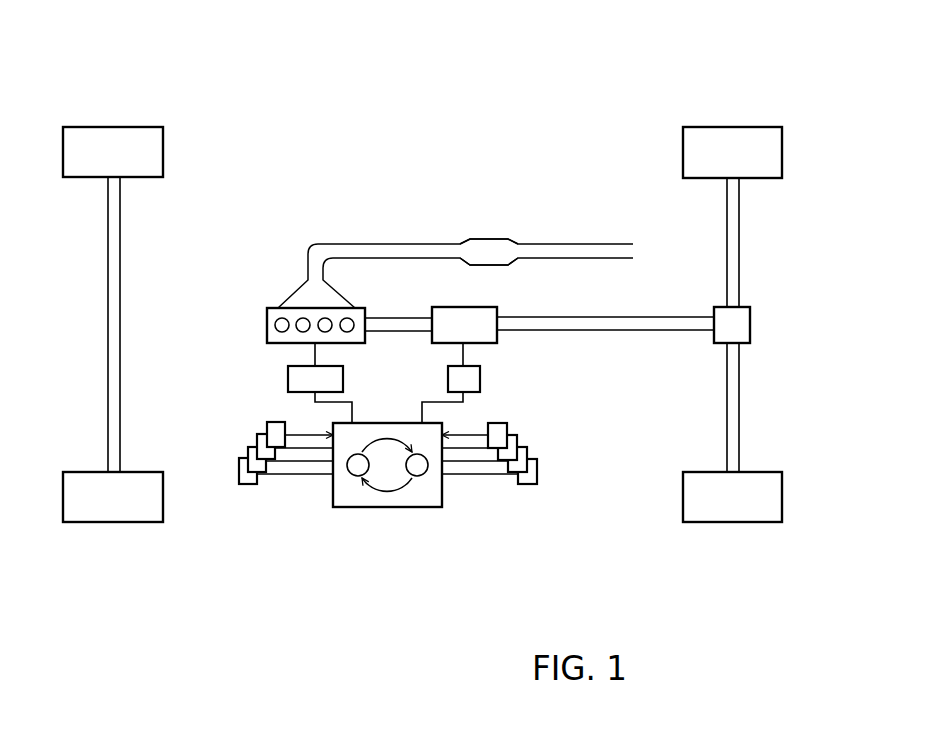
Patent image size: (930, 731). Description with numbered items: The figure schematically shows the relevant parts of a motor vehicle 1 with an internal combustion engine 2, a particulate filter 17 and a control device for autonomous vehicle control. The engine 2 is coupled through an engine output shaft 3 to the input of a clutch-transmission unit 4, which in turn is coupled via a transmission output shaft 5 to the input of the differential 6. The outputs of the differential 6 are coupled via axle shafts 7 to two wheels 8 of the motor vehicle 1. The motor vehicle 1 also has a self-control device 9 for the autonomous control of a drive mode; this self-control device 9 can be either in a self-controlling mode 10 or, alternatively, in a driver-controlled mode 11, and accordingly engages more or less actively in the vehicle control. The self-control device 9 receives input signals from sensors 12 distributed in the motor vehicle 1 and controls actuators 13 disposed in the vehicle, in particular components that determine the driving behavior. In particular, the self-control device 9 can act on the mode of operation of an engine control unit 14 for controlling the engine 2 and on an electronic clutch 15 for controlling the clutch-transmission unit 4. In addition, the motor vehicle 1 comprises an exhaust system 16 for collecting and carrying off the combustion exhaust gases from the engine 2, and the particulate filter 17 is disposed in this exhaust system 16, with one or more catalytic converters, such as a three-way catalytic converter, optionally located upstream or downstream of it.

The motor vehicle 1 is at (82, 86).
The internal combustion engine 2 is at (268, 322).
The engine output shaft 3 is at (398, 316).
The clutch-transmission unit 4 is at (460, 318).
The transmission output shaft 5 is at (560, 325).
The differential 6 is at (738, 323).
The axle shafts 7 is at (739, 235).
The wheels 8 is at (137, 147).
The self-control device 9 is at (398, 497).
The self-controlling mode 10 is at (358, 472).
The driver-controlled mode 11 is at (418, 470).
The sensors 12 is at (252, 483).
The actuators 13 is at (522, 483).
The engine control unit 14 is at (290, 378).
The electronic clutch 15 is at (470, 378).
The exhaust system 16 is at (412, 248).
The particulate filter 17 is at (503, 255).